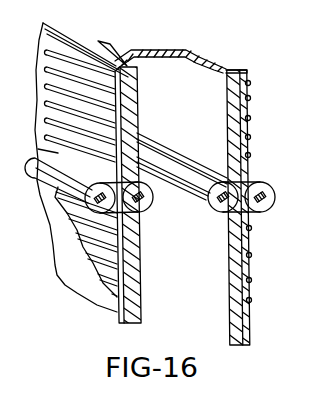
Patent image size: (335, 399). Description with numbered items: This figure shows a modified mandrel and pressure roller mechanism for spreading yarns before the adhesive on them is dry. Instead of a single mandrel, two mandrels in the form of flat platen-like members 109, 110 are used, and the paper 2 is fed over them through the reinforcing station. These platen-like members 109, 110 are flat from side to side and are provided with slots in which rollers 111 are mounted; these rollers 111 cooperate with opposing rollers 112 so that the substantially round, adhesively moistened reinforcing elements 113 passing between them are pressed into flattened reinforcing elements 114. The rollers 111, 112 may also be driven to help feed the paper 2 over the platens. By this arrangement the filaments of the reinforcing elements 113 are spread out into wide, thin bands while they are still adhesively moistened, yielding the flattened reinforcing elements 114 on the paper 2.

The paper 2 is at (250, 249).
The platen-like member 109 is at (141, 97).
The platen-like member 110 is at (240, 71).
The rollers 111 is at (178, 162).
The rollers 112 is at (275, 195).
The reinforcing elements 113 is at (73, 50).
The flattened reinforcing elements 114 is at (252, 300).